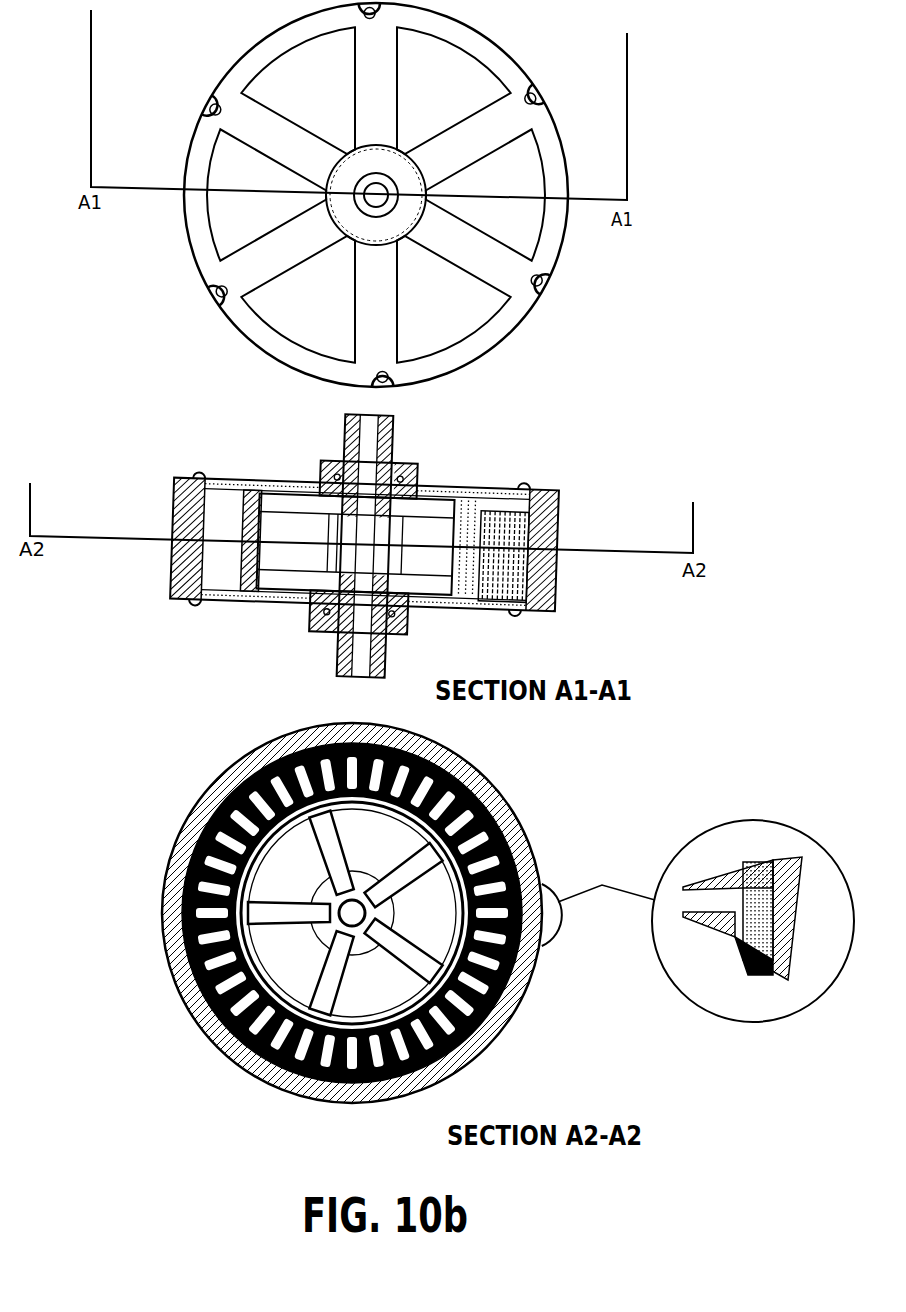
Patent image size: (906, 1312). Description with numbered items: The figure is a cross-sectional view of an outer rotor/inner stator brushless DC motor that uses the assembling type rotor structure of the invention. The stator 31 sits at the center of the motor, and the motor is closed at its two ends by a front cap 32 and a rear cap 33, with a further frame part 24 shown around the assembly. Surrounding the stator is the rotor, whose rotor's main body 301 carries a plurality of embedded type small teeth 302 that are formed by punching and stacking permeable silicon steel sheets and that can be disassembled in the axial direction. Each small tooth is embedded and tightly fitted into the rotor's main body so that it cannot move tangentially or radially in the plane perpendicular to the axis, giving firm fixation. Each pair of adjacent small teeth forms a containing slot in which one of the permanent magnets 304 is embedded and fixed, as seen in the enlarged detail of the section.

The housing frame 24 is at (363, 566).
The stator 31 is at (392, 434).
The rear cap 33 is at (401, 468).
The front cap 32 is at (383, 626).
The rotor's main body 301 is at (362, 912).
The embedded type small teeth 302 is at (748, 864).
The permanent magnets 304 is at (809, 889).